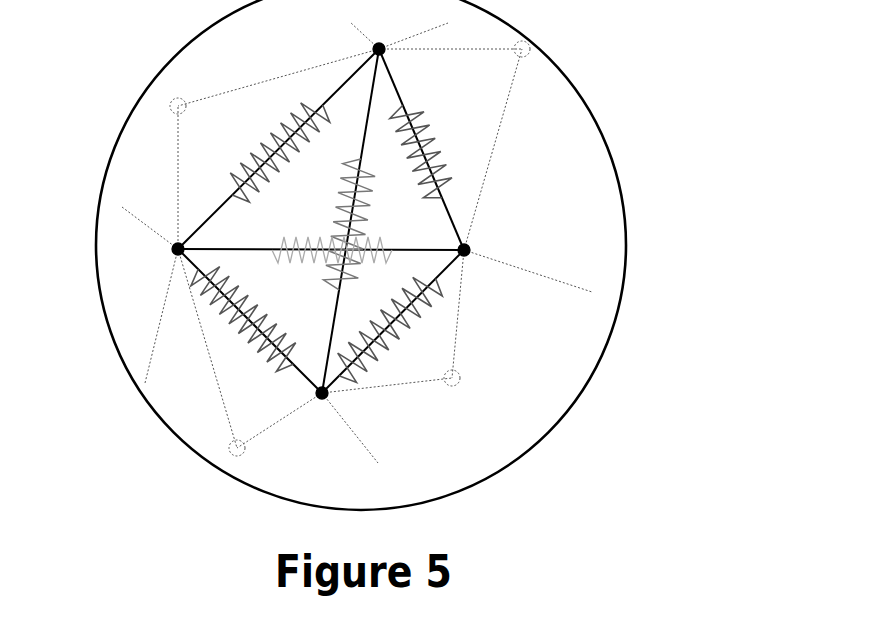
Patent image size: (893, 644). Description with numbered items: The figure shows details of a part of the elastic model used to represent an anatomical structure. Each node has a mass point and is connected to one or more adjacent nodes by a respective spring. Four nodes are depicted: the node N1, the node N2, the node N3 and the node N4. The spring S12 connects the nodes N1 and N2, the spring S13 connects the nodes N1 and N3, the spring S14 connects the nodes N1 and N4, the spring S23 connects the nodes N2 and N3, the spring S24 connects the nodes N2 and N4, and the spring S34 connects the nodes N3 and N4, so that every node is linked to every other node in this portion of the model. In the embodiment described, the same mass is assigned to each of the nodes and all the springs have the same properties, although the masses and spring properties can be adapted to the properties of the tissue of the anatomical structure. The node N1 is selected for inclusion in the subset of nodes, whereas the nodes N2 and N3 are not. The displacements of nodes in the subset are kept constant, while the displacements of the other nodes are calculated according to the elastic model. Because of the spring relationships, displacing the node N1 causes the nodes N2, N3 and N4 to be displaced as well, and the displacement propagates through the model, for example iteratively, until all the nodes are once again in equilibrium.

The node N1 is at (160, 252).
The node N2 is at (320, 408).
The node N3 is at (483, 252).
The node N4 is at (386, 35).
The spring S12 is at (243, 326).
The spring S23 is at (390, 329).
The spring S34 is at (437, 151).
The spring S14 is at (276, 152).
The spring S13 is at (388, 242).
The spring S24 is at (328, 213).